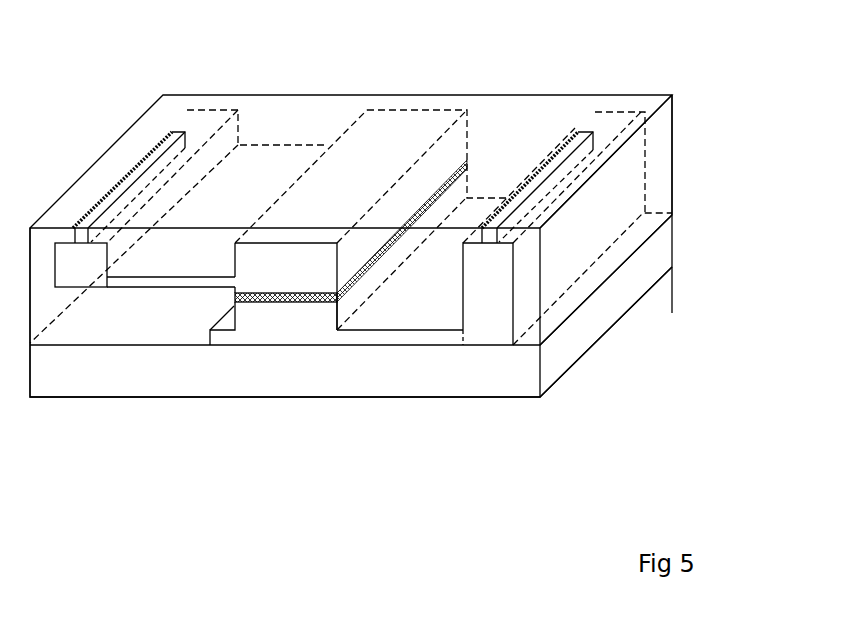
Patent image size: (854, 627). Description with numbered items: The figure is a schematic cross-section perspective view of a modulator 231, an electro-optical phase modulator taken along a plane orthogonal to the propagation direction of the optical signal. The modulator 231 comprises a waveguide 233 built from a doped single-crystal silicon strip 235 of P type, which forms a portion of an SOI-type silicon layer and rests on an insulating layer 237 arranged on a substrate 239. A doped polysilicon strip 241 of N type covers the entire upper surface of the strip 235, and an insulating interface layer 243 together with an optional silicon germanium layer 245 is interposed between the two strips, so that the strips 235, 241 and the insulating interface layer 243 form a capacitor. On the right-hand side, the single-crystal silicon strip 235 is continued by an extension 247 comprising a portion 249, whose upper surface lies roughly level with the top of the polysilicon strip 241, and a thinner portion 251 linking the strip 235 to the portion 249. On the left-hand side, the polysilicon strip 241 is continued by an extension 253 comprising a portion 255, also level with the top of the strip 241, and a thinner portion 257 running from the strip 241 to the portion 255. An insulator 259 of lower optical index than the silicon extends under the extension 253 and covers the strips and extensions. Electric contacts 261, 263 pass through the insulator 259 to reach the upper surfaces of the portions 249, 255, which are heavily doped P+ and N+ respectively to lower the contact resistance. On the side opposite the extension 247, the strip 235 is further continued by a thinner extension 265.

The modulator 231 is at (176, 87).
The waveguide 233 is at (410, 106).
The doped single-crystal silicon strip 235 is at (460, 190).
The insulating layer 237 is at (656, 250).
The substrate 239 is at (657, 297).
The doped polysilicon strip 241 is at (465, 135).
The insulating interface layer 243 is at (322, 302).
The silicon germanium layer 245 is at (252, 303).
The extension 247 is at (504, 294).
The portion 249 is at (481, 337).
The portion 251 is at (425, 340).
The extension 253 is at (179, 294).
The portion 255 is at (78, 280).
The portion 257 is at (162, 282).
The insulator 259 is at (658, 150).
The electric contact 261 is at (560, 152).
The electric contact 263 is at (172, 131).
The extension 265 is at (218, 338).